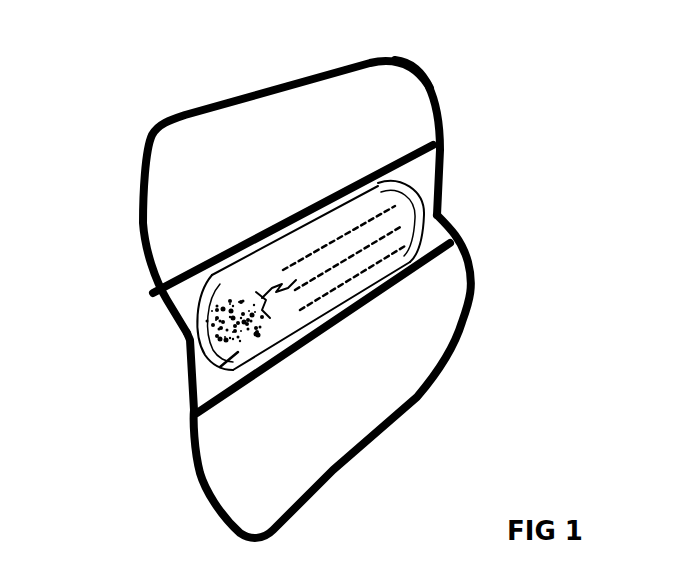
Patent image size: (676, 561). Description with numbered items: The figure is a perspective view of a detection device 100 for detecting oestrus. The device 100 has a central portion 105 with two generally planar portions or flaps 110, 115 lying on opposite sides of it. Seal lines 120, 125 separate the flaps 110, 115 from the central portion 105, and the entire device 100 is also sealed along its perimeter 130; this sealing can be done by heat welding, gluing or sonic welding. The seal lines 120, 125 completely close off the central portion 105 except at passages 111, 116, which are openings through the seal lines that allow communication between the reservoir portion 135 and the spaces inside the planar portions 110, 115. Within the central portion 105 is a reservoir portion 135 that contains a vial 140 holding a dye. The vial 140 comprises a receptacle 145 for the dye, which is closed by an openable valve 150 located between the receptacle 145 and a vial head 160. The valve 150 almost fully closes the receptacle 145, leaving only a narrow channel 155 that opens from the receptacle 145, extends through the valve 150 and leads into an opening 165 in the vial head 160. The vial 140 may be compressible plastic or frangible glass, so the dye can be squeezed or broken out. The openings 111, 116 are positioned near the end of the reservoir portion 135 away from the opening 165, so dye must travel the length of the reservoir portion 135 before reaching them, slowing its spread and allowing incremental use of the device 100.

The detection device 100 is at (565, 135).
The central portion 105 is at (180, 305).
The generally planar portion 110 is at (165, 193).
The passage 111 is at (373, 181).
The generally planar portion 115 is at (353, 428).
The passage 116 is at (417, 273).
The seal line 120 is at (180, 272).
The seal line 125 is at (250, 336).
The perimeter 130 is at (425, 82).
The reservoir portion 135 is at (237, 353).
The vial 140 is at (278, 265).
The receptacle 145 is at (373, 243).
The openable valve 150 is at (328, 325).
The narrow channel 155 is at (305, 330).
The vial head 160 is at (263, 320).
The opening 165 is at (217, 337).